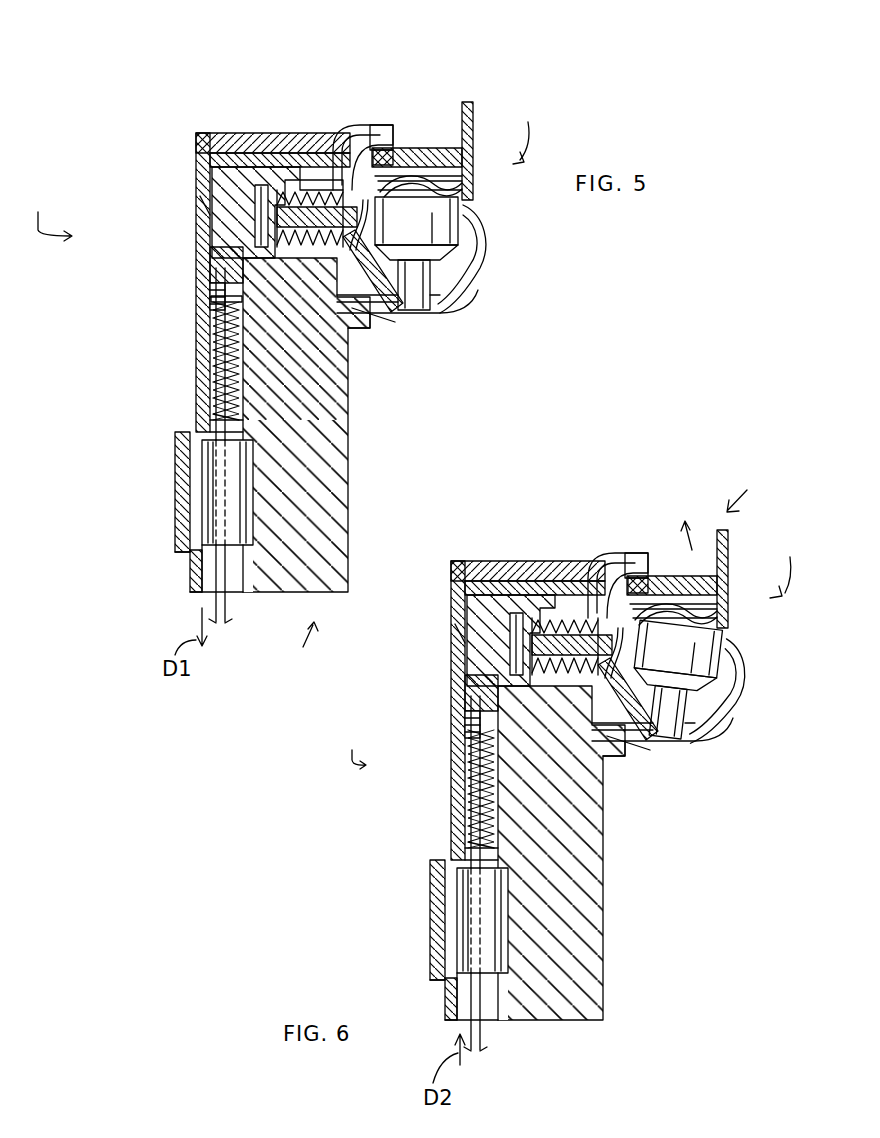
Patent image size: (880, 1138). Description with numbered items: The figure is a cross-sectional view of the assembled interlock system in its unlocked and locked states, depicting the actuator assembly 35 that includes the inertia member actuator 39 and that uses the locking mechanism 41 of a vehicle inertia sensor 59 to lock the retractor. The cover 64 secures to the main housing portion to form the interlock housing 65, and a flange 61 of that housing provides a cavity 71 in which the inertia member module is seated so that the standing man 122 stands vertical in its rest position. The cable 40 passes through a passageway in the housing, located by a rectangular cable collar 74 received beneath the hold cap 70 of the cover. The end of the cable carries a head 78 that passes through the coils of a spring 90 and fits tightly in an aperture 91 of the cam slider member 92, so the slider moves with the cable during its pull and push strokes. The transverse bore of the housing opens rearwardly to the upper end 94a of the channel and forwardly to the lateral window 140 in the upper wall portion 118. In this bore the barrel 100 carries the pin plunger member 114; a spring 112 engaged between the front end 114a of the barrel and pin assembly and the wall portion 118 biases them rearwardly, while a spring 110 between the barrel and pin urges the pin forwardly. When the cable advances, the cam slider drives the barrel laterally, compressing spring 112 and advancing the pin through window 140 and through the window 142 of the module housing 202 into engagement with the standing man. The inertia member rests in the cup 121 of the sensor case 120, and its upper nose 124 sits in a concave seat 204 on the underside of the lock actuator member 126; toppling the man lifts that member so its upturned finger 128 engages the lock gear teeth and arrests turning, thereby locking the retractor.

In FIG. 5, the actuator assembly 35 is at (46, 212).
In FIG. 6, the actuator assembly 35 is at (352, 745).
In FIG. 5, the inertia member actuator 39 is at (362, 330).
In FIG. 6, the inertia member actuator 39 is at (575, 853).
In FIG. 5, the cable 40 is at (223, 608).
In FIG. 6, the cable 40 is at (437, 870).
In FIG. 6, the locking mechanism 41 is at (752, 495).
In FIG. 5, the vehicle inertia sensor 59 is at (524, 130).
In FIG. 6, the vehicle inertia sensor 59 is at (787, 565).
In FIG. 5, the flange 61 is at (372, 320).
In FIG. 6, the flange 61 is at (614, 748).
In FIG. 5, the cover 64 is at (197, 188).
In FIG. 6, the cover 64 is at (528, 710).
In FIG. 5, the interlock housing 65 is at (297, 647).
In FIG. 5, the hold cap 70 is at (175, 490).
In FIG. 6, the hold cap 70 is at (464, 940).
In FIG. 5, the cavity 71 is at (395, 132).
In FIG. 6, the cavity 71 is at (636, 573).
In FIG. 5, the cable collar 74 is at (205, 527).
In FIG. 6, the cable collar 74 is at (482, 920).
In FIG. 5, the head 78 is at (200, 312).
In FIG. 5, the spring 90 is at (208, 385).
In FIG. 6, the spring 90 is at (448, 795).
In FIG. 5, the aperture 91 is at (210, 292).
In FIG. 6, the aperture 91 is at (436, 691).
In FIG. 5, the cam slider member 92 is at (200, 262).
In FIG. 6, the cam slider member 92 is at (450, 662).
In FIG. 5, the upper end of channel 94a is at (200, 205).
In FIG. 6, the upper end of channel 94a is at (427, 566).
In FIG. 5, the barrel 100 is at (228, 160).
In FIG. 6, the barrel 100 is at (505, 585).
In FIG. 5, the spring 110 is at (270, 195).
In FIG. 6, the spring 110 is at (502, 598).
In FIG. 5, the spring 112 is at (283, 192).
In FIG. 6, the spring 112 is at (565, 584).
In FIG. 5, the pin plunger member 114 is at (335, 207).
In FIG. 6, the pin plunger member 114 is at (558, 587).
In FIG. 5, the front end 114a is at (300, 190).
In FIG. 5, the upper wall portion 118 is at (263, 187).
In FIG. 6, the upper wall portion 118 is at (516, 644).
In FIG. 5, the sensor case 120 is at (480, 243).
In FIG. 6, the sensor case 120 is at (687, 690).
In FIG. 5, the cup 121 is at (417, 313).
In FIG. 6, the cup 121 is at (662, 765).
In FIG. 5, the standing man 122 is at (447, 213).
In FIG. 6, the standing man 122 is at (720, 681).
In FIG. 5, the upper nose 124 is at (400, 190).
In FIG. 6, the upper nose 124 is at (718, 621).
In FIG. 5, the lock actuator member 126 is at (430, 137).
In FIG. 6, the lock actuator member 126 is at (676, 557).
In FIG. 5, the upturned finger 128 is at (472, 103).
In FIG. 6, the upturned finger 128 is at (677, 551).
In FIG. 5, the lateral window 140 is at (337, 180).
In FIG. 6, the lateral window 140 is at (617, 548).
In FIG. 5, the window 142 is at (395, 323).
In FIG. 6, the window 142 is at (636, 586).
In FIG. 5, the housing 202 is at (420, 312).
In FIG. 6, the housing 202 is at (670, 745).
In FIG. 5, the concave seat 204 is at (430, 179).
In FIG. 6, the concave seat 204 is at (746, 587).